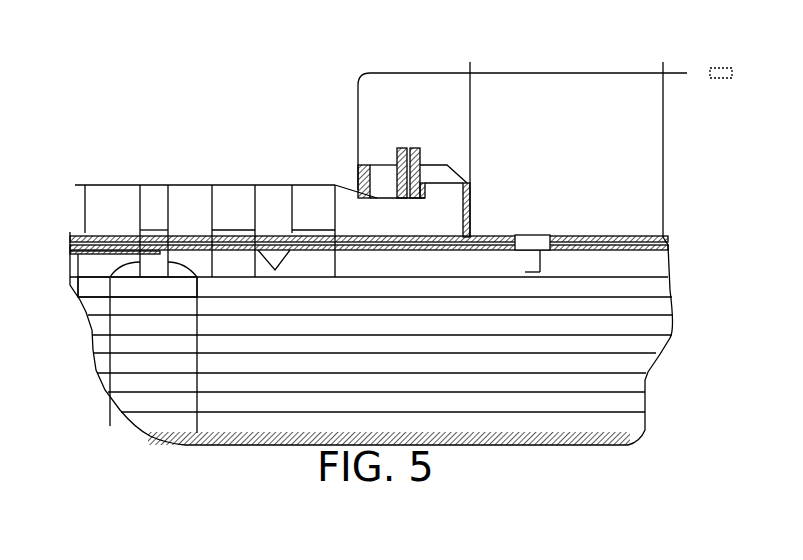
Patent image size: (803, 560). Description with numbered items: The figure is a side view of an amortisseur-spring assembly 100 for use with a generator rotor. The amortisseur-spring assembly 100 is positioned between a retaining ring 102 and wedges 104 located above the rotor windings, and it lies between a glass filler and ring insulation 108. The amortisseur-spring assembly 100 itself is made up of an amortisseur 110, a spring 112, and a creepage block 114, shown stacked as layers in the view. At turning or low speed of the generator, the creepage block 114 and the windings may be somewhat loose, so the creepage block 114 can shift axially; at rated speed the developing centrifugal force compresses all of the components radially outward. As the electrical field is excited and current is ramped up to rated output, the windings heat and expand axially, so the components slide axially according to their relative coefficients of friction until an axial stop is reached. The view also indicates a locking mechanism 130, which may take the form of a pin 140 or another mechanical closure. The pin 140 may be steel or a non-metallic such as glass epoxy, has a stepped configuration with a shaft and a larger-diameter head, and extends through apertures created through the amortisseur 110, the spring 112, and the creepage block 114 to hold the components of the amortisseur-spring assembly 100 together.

The amortisseur-spring assembly 100 is at (88, 30).
The retaining ring 102 is at (577, 80).
The wedges 104 is at (403, 82).
The ring insulation 108 is at (159, 184).
The amortisseur 110 is at (110, 238).
The spring 112 is at (80, 268).
The creepage block 114 is at (78, 280).
The locking mechanism 130 is at (544, 232).
The pin 140 is at (537, 233).